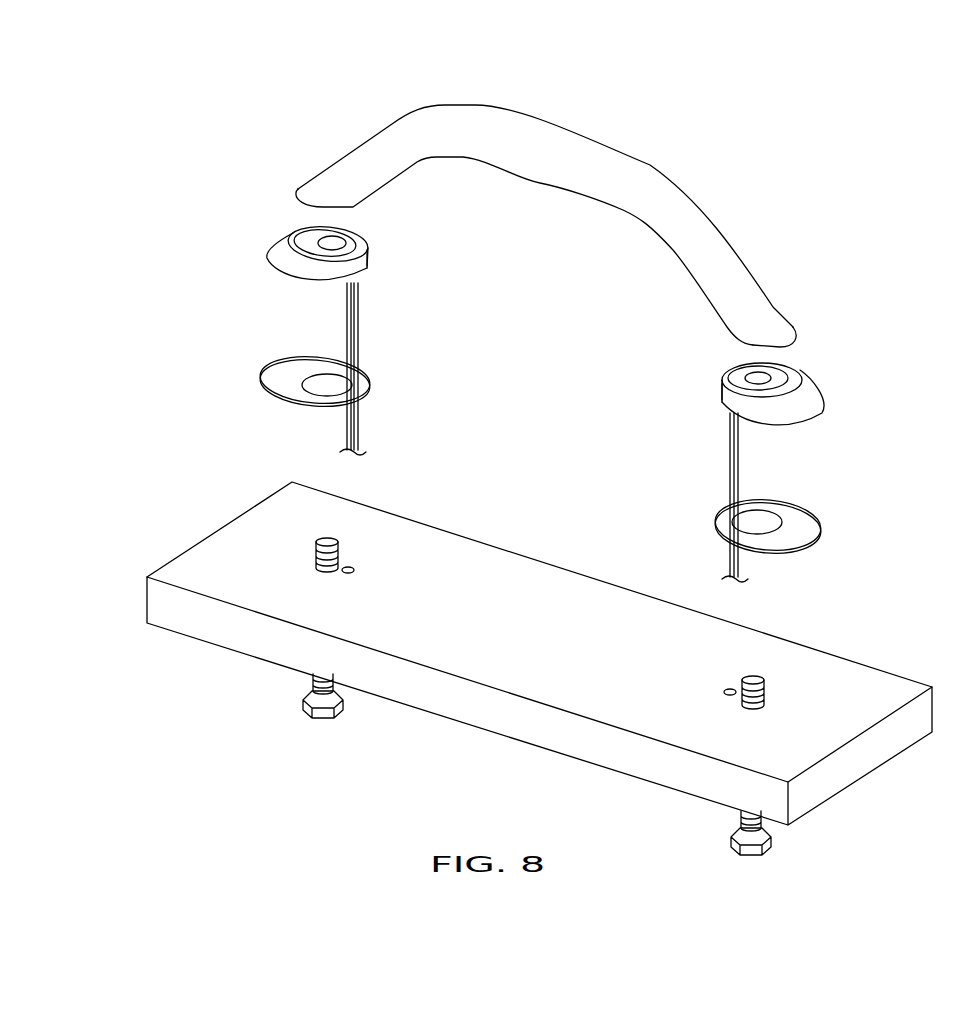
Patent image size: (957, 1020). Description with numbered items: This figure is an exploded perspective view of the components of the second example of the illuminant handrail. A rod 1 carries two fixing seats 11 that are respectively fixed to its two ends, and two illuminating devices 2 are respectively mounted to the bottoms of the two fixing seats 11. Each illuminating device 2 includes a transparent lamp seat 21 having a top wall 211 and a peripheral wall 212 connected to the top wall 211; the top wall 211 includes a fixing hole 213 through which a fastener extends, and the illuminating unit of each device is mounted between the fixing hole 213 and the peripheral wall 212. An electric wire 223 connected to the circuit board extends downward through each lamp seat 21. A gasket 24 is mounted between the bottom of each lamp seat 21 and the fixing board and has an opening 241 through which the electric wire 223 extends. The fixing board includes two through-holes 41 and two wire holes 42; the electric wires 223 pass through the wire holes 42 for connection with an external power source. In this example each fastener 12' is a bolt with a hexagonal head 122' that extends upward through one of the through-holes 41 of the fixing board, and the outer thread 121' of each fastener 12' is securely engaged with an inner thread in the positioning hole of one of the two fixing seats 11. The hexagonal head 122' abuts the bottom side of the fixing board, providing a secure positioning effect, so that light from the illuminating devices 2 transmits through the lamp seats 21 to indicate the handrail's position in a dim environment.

The rod 1 is at (575, 150).
The fixing seat 11 is at (326, 206).
The illuminating device 2 is at (542, 361).
The lamp seat 21 is at (548, 299).
The top wall 211 is at (312, 240).
The peripheral wall 212 is at (355, 273).
The fixing hole 213 is at (334, 246).
The electric wire 223 is at (360, 336).
The gasket 24 is at (537, 438).
The opening 241 is at (325, 378).
The through-hole 41 is at (318, 562).
The wire hole 42 is at (352, 566).
The fastener 12' is at (550, 774).
The outer thread 121' is at (467, 758).
The hexagonal head 122' is at (615, 776).